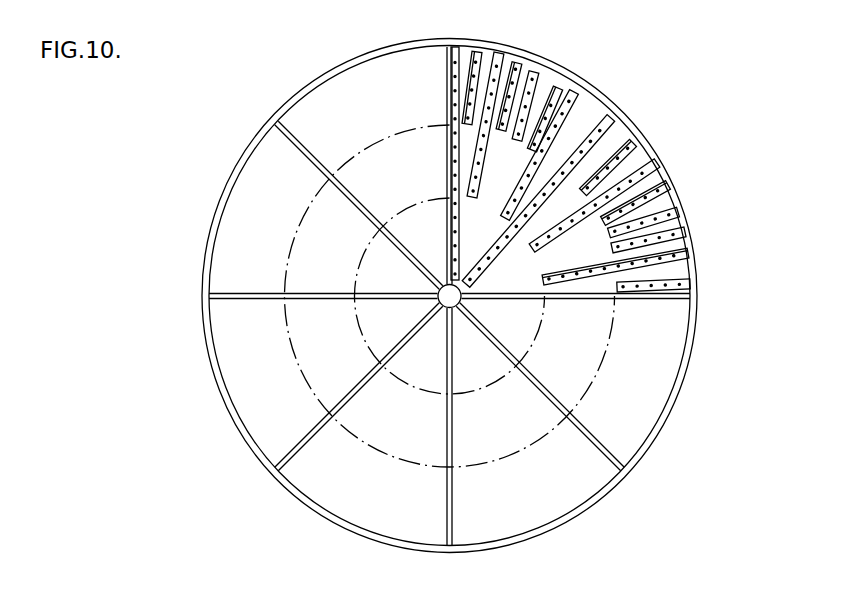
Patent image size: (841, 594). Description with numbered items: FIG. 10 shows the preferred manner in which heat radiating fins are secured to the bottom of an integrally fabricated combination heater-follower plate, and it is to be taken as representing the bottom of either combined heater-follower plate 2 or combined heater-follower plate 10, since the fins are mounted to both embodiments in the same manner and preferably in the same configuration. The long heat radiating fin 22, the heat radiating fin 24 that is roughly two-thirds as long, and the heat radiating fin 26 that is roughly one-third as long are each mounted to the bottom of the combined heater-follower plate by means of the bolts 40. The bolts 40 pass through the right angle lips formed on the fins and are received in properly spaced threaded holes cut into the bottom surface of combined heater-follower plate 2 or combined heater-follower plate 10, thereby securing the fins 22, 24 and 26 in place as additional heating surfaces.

The combined heater-follower plate 2 is at (697, 237).
The combined heater-follower plate 10 is at (449, 296).
The heat radiating fin 22 is at (446, 68).
The heat radiating fin 24 is at (497, 53).
The heat radiating fin 26 is at (474, 50).
The bolt 40 is at (456, 47).